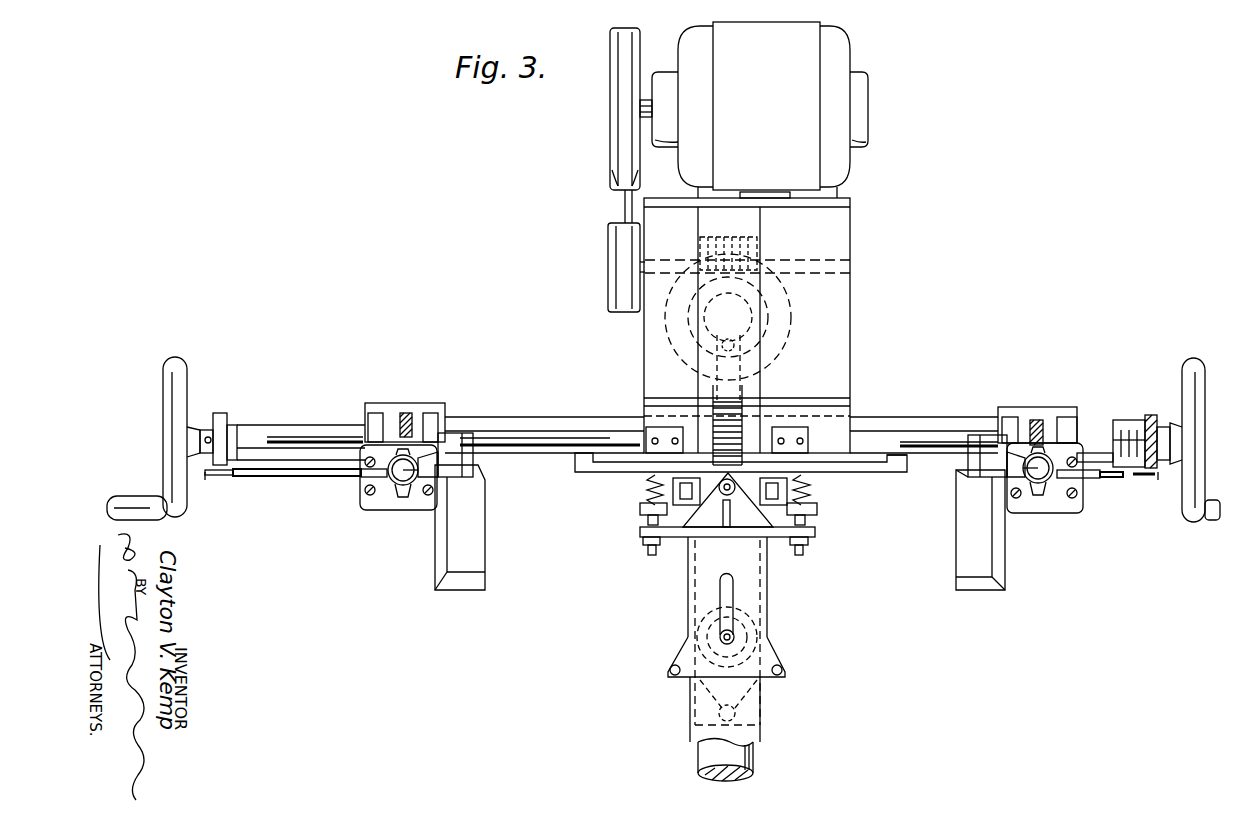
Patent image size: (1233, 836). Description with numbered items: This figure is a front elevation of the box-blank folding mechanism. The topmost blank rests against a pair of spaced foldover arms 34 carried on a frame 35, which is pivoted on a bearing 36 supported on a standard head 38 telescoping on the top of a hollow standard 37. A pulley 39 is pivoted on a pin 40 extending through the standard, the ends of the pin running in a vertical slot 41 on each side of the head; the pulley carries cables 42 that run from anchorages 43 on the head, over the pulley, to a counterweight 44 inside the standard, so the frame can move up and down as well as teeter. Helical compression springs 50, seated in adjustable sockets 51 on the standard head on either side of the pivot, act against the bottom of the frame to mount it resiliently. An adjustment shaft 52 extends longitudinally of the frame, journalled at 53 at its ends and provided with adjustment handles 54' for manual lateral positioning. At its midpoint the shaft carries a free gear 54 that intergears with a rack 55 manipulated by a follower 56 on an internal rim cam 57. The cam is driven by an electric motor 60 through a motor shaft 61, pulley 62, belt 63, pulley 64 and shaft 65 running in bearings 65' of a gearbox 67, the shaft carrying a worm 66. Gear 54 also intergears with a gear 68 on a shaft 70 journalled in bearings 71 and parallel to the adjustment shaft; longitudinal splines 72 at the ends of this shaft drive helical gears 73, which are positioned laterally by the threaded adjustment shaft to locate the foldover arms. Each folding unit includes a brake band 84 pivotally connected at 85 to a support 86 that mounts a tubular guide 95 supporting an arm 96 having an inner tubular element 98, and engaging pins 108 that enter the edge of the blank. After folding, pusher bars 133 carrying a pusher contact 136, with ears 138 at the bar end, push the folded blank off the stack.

The foldover arms 34 is at (470, 476).
The frame 35 is at (478, 418).
The bearing 36 is at (722, 495).
The hollow standard 37 is at (760, 705).
The standard head 38 is at (762, 583).
The pulley 39 is at (742, 614).
The pin 40 is at (720, 640).
The vertical slot 41 is at (722, 612).
The cables 42 is at (772, 642).
The anchorages 43 is at (785, 672).
The counterweight 44 is at (710, 748).
The helical compression springs 50 is at (645, 490).
The adjustable sockets 51 is at (818, 508).
The adjustment shaft 52 is at (1128, 428).
The journal 53 is at (1151, 416).
The gear 54 is at (764, 373).
The adjustment handles 54' is at (666, 419).
The rack 55 is at (768, 385).
The follower 56 is at (770, 350).
The internal rim cam 57 is at (775, 318).
The electric motor 60 is at (836, 65).
The motor shaft 61 is at (650, 98).
The pulley 62 is at (611, 153).
The belt 63 is at (626, 200).
The pulley 64 is at (608, 283).
The shaft 65 is at (697, 251).
The bearings 65' is at (789, 258).
The worm 66 is at (820, 245).
The gearbox 67 is at (850, 215).
The gear 68 is at (712, 422).
The shaft 70 is at (276, 427).
The bearings 71 is at (220, 413).
The longitudinal splines 72 is at (932, 462).
The helical gears 73 is at (405, 413).
The brake band 84 is at (392, 458).
The pivot 85 is at (406, 492).
The support 86 is at (397, 481).
The tubular guide 95 is at (368, 476).
The arm 96 is at (290, 477).
The inner tubular element 98 is at (205, 480).
The engaging pins 108 is at (222, 480).
The pusher bars 133 is at (812, 490).
The pusher contact 136 is at (592, 472).
The ears 138 is at (905, 465).